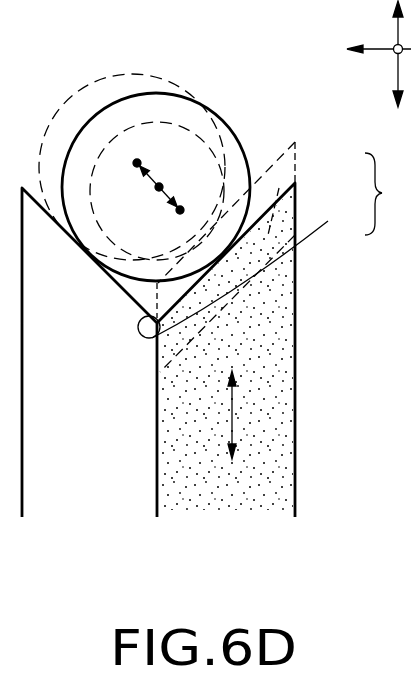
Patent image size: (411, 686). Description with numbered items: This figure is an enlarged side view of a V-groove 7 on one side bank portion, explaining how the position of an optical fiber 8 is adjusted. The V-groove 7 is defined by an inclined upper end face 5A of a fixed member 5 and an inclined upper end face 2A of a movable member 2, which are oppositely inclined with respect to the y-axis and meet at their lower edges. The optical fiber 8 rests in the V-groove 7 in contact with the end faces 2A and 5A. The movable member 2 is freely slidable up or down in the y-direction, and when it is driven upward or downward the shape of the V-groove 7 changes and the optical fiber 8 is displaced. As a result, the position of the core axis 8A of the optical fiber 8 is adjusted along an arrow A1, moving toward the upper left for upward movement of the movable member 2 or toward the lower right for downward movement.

The movable member 2 is at (237, 503).
The inclined upper end face of the movable member 2A is at (283, 150).
The fixed member 5 is at (95, 487).
The inclined upper end face of the fixed member 5A is at (254, 269).
The V-groove 7 is at (387, 194).
The optical fiber 8 is at (240, 142).
The core axis 8A is at (156, 190).
The arrow A1 is at (164, 183).